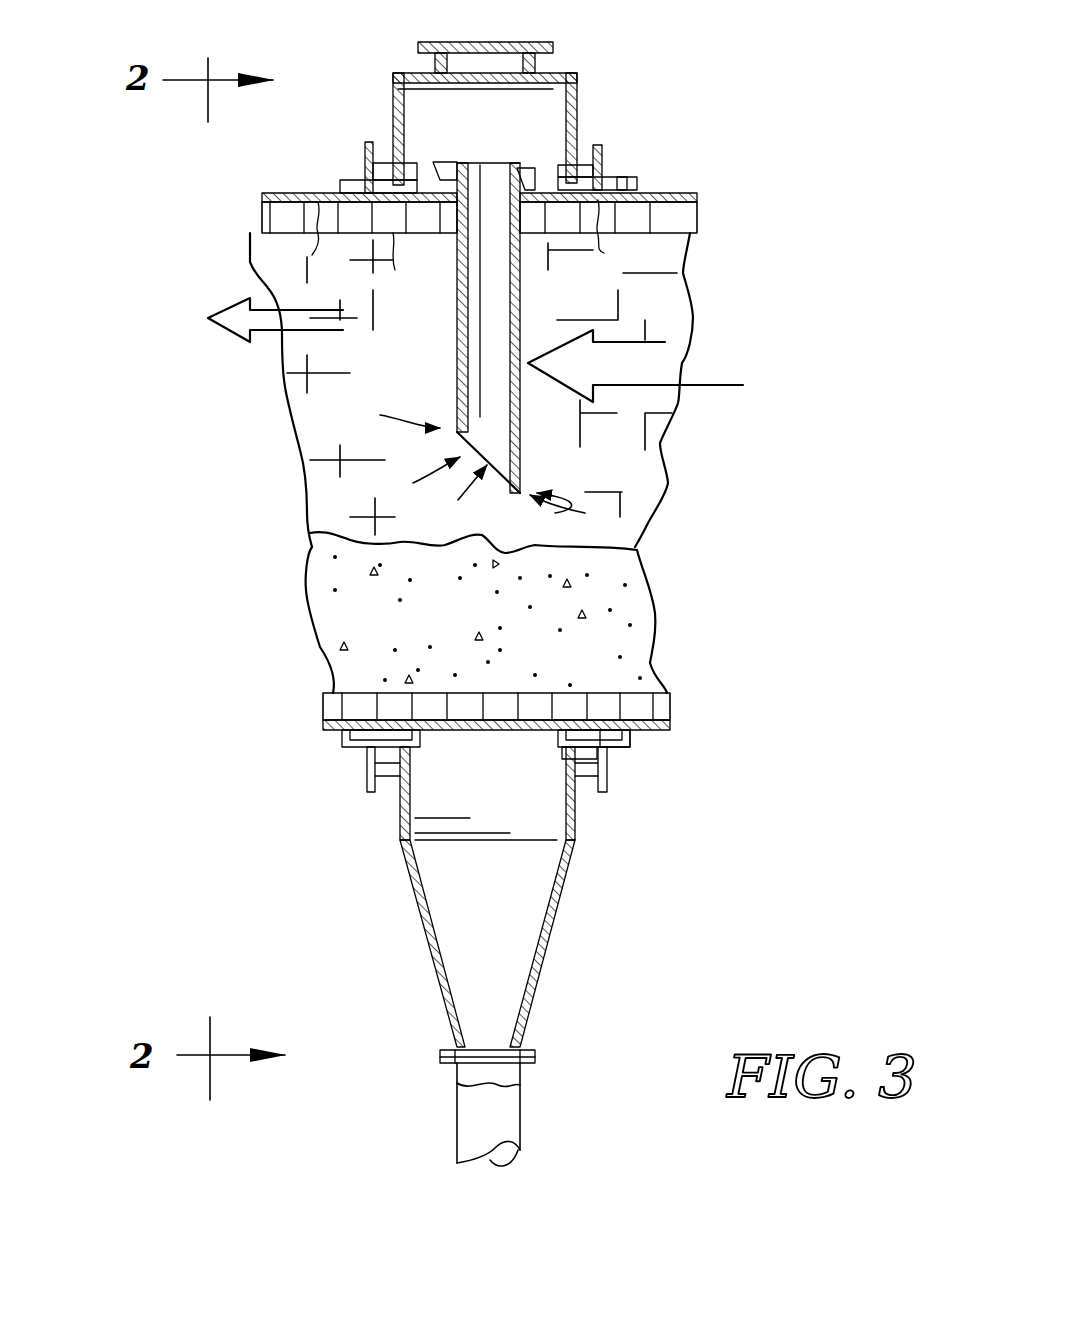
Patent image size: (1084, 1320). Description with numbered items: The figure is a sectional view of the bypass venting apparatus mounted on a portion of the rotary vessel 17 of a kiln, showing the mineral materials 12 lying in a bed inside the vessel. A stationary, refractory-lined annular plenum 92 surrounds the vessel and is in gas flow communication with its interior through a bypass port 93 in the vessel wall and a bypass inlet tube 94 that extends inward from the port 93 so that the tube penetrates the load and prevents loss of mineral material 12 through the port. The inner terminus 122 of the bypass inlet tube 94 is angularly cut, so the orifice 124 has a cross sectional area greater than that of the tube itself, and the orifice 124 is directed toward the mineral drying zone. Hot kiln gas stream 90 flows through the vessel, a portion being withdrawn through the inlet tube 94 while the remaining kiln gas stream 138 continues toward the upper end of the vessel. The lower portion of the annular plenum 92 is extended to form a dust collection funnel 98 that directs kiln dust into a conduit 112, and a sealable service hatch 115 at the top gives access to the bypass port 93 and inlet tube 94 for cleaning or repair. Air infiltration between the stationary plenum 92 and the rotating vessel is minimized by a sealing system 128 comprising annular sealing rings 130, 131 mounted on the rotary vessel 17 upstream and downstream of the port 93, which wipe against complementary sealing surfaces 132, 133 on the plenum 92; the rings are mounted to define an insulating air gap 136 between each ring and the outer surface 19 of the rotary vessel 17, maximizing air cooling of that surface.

The mineral materials 12 is at (633, 603).
The rotary vessel 17 is at (312, 235).
The outer surface of the rotary vessel 19 is at (393, 175).
The hot kiln gas stream 90 is at (650, 342).
The annular plenum 92 is at (400, 128).
The bypass port 93 is at (497, 165).
The bypass inlet tube 94 is at (462, 385).
The dust collection funnel 98 is at (543, 957).
The conduit 112 is at (515, 1120).
The sealable service hatch 115 is at (500, 45).
The inner terminus 122 is at (450, 449).
The orifice 124 is at (499, 499).
The sealing system 128 is at (628, 183).
The annular sealing ring 130 is at (343, 172).
The annular sealing ring 131 is at (615, 179).
The sealing surface 132 is at (375, 178).
The sealing surface 133 is at (602, 176).
The insulating air gap 136 is at (594, 728).
The kiln gas stream 138 is at (240, 325).